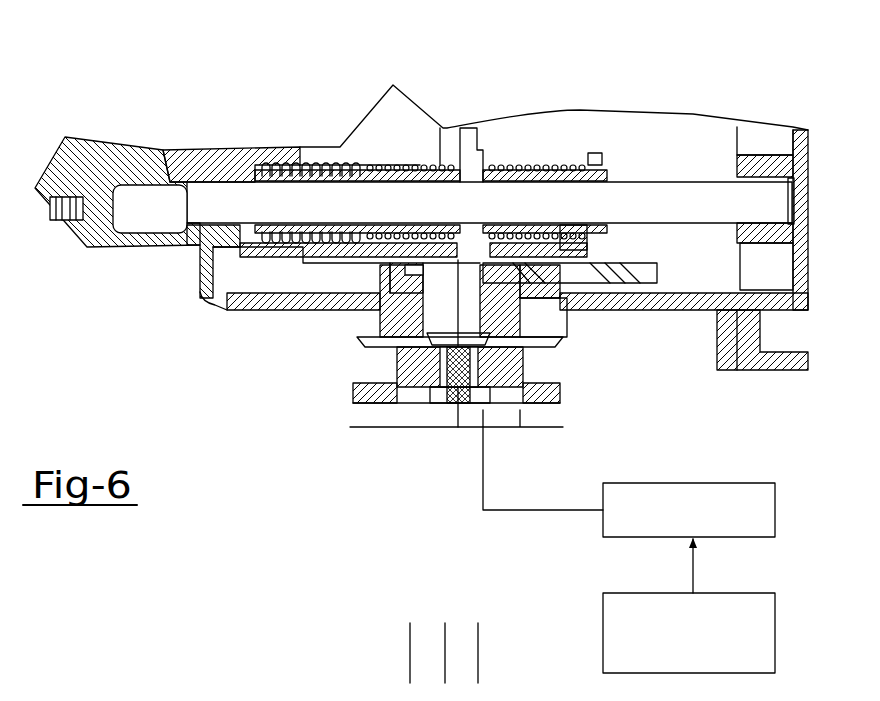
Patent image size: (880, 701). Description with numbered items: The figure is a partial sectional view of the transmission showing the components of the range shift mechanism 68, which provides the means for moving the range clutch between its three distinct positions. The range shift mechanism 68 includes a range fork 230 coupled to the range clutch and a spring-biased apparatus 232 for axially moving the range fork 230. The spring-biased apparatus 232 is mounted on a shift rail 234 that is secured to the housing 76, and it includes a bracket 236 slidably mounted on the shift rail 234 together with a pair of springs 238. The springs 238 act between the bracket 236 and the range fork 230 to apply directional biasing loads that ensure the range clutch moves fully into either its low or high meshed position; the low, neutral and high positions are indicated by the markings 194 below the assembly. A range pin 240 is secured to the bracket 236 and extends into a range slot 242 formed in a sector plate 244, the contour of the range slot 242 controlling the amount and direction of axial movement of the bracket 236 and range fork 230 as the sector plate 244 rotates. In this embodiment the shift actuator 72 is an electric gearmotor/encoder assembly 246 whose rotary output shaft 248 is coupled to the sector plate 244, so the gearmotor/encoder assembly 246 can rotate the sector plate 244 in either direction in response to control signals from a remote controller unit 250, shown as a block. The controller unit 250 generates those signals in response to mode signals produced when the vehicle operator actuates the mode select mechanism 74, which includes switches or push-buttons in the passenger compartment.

The range shift mechanism 68 is at (243, 262).
The shift actuator 72 is at (385, 412).
The mode select mechanism 74 is at (767, 620).
The housing 76 is at (760, 368).
The shift positions 194 is at (389, 647).
The range fork 230 is at (418, 130).
The spring-biased apparatus 232 is at (310, 160).
The shift rail 234 is at (757, 190).
The bracket 236 is at (593, 235).
The springs 238 is at (290, 163).
The range pin 240 is at (567, 283).
The range slot 242 is at (578, 283).
The sector plate 244 is at (640, 283).
The gearmotor/encoder assembly 246 is at (517, 427).
The rotary output shaft 248 is at (400, 347).
The controller unit 250 is at (775, 512).